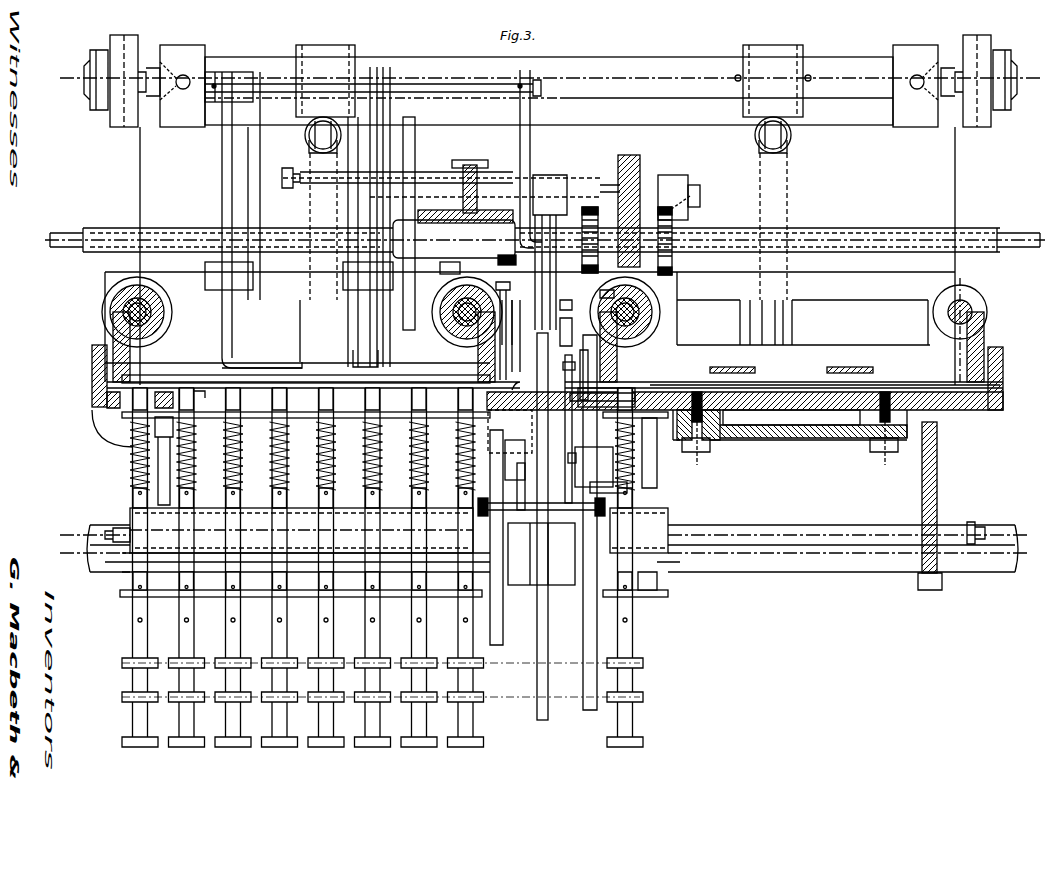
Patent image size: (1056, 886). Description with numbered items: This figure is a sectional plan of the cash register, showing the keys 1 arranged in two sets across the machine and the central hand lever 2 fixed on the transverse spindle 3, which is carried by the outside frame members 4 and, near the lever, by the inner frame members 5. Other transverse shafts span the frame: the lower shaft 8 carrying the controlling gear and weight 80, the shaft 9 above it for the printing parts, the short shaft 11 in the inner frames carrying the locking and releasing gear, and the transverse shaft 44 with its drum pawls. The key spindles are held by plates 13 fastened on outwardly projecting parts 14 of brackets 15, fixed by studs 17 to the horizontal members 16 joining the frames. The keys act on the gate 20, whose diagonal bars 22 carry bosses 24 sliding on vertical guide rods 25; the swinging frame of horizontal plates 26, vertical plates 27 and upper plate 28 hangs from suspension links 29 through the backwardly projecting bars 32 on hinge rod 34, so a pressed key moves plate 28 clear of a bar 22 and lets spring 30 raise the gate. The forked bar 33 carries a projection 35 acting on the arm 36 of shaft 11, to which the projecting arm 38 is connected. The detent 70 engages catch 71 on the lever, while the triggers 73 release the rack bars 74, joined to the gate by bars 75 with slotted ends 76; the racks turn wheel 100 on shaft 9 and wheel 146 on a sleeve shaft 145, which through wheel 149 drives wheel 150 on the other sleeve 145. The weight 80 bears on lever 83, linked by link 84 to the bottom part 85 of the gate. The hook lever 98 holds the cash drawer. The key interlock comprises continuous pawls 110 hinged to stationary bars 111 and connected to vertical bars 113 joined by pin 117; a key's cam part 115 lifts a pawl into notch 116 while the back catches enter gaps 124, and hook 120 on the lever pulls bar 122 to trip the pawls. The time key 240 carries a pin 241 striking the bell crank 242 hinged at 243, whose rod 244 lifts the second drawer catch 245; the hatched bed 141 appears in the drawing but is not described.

The keys 1 is at (276, 398).
The hand operated handle or lever 2 is at (552, 346).
The transverse spindle 3 is at (92, 530).
The outside members of the main frame 4 is at (90, 405).
The inner members of the frame 5 is at (467, 163).
The shaft 8 is at (254, 65).
The shaft 9 is at (59, 235).
The short shaft 11 is at (588, 194).
The plates 13 is at (258, 404).
The outwardly projecting parts 14 is at (937, 474).
The bracket 15 is at (794, 438).
The transverse horizontal members 16 is at (505, 426).
The studs 17 is at (205, 462).
The gate device 20 is at (134, 364).
The diagonal bars 22 is at (108, 384).
The bosses 24 is at (136, 287).
The vertical guide rods 25 is at (123, 312).
The horizontal plates 26 is at (664, 383).
The vertical plates 27 is at (260, 350).
The plate 28 is at (181, 379).
The suspension links 29 is at (210, 105).
The spring 30 is at (306, 138).
The horizontal backwardly projecting bars 32 is at (222, 164).
The arm or bar 33 is at (400, 108).
The hinge rod 34 is at (278, 100).
The projection 35 is at (454, 244).
The lever or arm 36 is at (398, 199).
The projecting arm or lever 38 is at (415, 142).
The transverse shaft 44 is at (298, 185).
The catch or detent 70 is at (571, 308).
The catch 71 is at (576, 329).
The bell crank trigger 73 is at (540, 176).
The rack bars 74 is at (479, 266).
The bars 75 is at (540, 345).
The slotted ends 76 is at (531, 301).
The weight 80 is at (147, 175).
The lever 83 is at (320, 48).
The link 84 is at (346, 314).
The bottom part of the gate 85 is at (346, 329).
The hook lever 98 is at (503, 328).
The pinion / wheel 100 is at (585, 231).
The continuous hinged double pawls 110 is at (134, 516).
The stationary bars 111 is at (116, 522).
The vertical movable bars 113 is at (556, 500).
The curved cam shaped part 115 is at (224, 562).
The notch 116 is at (232, 582).
The pin 117 is at (564, 518).
The hook 120 is at (533, 498).
The bar 122 is at (540, 486).
The gaps 124 is at (187, 499).
The bed 141 is at (465, 200).
The sleeve shafts 145 is at (155, 223).
The wheel 146 is at (498, 267).
The toothed wheel 149 is at (696, 193).
The wheel 150 is at (672, 262).
The time key 240 is at (638, 636).
The pin 241 is at (608, 479).
The bell crank lever 242 is at (558, 462).
The hinge 243 is at (594, 459).
The rod 244 is at (572, 425).
The second drawer catch 245 is at (585, 367).